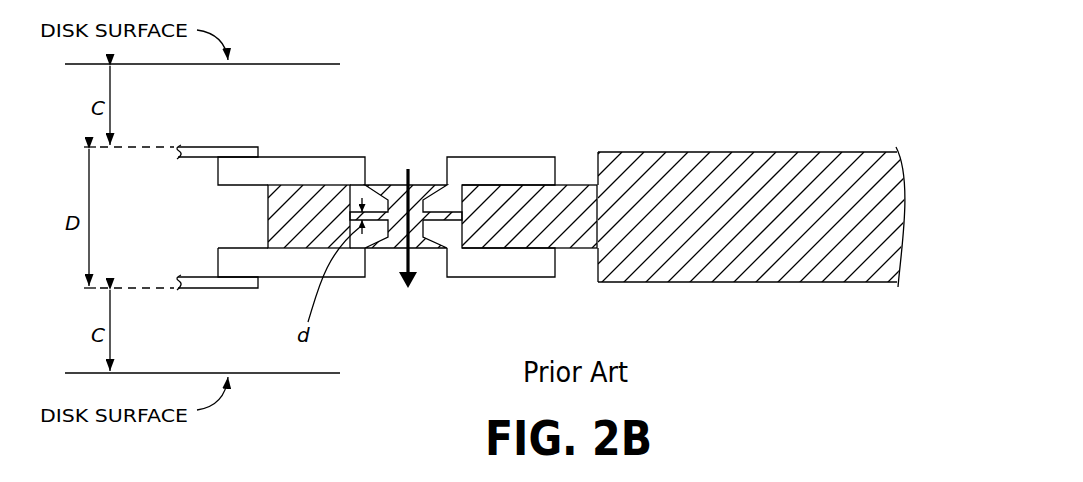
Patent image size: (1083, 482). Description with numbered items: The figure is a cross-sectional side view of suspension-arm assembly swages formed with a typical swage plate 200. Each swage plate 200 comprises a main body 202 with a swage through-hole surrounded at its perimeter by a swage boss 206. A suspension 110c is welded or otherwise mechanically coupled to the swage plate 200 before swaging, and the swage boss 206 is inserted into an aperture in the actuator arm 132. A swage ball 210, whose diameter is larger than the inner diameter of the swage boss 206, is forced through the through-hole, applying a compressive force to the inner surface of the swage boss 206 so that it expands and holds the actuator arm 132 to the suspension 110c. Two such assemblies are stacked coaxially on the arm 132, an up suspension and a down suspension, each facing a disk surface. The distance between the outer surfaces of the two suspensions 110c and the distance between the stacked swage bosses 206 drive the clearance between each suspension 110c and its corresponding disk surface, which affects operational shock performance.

The suspension 110c is at (215, 152).
The swage plate 200 is at (531, 151).
The main body 202 is at (320, 172).
The swage boss 206 is at (446, 190).
The swage ball 210 is at (428, 152).
The actuator arm 132 is at (797, 170).